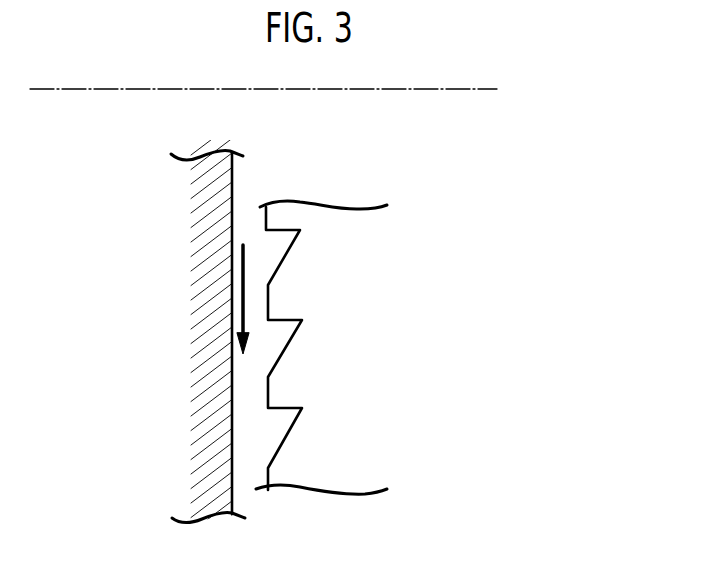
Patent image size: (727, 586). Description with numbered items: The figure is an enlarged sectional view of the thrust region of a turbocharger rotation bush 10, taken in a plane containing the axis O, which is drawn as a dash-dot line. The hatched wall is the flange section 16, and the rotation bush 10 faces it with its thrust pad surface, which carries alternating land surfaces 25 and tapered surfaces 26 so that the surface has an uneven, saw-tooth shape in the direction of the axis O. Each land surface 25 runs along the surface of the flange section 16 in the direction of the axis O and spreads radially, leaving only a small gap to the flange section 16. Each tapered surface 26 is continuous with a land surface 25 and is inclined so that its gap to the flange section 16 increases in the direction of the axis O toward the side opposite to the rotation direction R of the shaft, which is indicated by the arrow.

The flange section 16 is at (218, 166).
The axis O is at (462, 90).
The rotation direction R is at (246, 257).
The rotation bush 10 is at (337, 405).
The land surface 25 is at (268, 297).
The tapered surface 26 is at (287, 350).